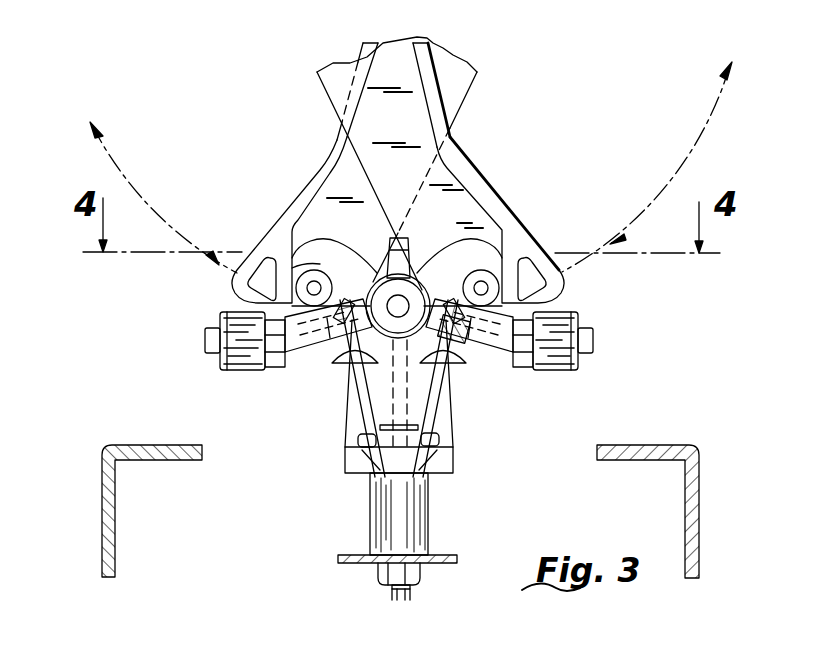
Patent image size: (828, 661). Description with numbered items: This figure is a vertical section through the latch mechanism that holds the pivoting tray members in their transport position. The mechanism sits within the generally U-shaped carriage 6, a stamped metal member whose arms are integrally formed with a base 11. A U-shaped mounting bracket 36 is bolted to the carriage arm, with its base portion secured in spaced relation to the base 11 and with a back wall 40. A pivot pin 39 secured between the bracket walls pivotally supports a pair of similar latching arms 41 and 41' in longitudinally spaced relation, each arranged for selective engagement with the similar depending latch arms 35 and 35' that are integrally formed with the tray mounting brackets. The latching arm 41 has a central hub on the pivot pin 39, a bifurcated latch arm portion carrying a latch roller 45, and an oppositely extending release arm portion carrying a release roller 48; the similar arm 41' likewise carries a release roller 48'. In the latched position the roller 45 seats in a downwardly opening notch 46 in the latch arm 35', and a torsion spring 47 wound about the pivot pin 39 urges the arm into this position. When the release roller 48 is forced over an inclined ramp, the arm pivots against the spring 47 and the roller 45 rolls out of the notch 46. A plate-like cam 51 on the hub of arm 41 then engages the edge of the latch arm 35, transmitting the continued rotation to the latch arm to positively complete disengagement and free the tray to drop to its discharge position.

The depending latch arm 35 is at (305, 173).
The depending latch arm 35' is at (488, 173).
The cam 51 is at (407, 240).
The pivot pin 39 is at (402, 302).
The latch roller 45 is at (320, 266).
The notch 46 is at (309, 270).
The torsion spring 47 is at (437, 275).
The latching arm 41 is at (469, 351).
The latching arm 41' is at (320, 353).
The release roller 48 is at (553, 365).
The release roller 48' is at (233, 326).
The back wall 40 is at (442, 433).
The mounting bracket 36 is at (456, 476).
The carriage 6 is at (334, 553).
The base 11 is at (412, 592).